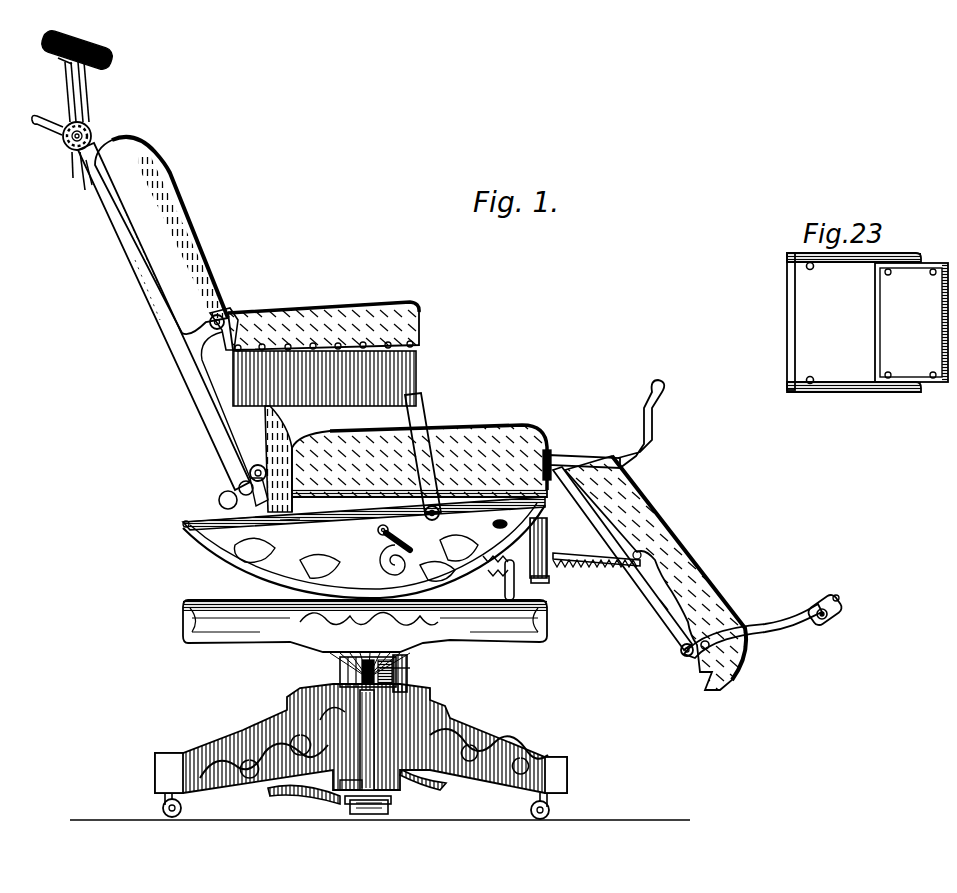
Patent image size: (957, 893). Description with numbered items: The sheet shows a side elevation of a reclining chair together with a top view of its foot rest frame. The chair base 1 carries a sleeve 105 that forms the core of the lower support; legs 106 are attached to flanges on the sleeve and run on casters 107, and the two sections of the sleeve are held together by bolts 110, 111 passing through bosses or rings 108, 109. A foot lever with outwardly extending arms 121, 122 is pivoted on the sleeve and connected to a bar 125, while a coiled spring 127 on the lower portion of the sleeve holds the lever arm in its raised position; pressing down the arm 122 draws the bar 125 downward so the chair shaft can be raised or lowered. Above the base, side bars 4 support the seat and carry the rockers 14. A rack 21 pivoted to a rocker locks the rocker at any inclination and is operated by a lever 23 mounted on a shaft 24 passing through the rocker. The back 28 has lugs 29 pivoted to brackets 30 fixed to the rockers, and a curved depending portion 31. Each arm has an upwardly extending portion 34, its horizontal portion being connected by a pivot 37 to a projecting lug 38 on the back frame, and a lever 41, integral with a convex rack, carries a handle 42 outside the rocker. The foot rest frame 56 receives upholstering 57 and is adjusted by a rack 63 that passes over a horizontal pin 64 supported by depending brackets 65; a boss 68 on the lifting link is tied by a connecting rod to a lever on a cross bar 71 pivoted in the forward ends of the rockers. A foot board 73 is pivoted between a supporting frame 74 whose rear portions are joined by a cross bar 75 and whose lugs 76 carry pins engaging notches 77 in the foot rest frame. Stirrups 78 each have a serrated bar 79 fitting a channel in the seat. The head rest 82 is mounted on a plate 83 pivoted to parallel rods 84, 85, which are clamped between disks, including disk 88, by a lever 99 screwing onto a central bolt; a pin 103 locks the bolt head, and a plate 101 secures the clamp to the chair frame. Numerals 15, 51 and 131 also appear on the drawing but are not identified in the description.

In FIG. 1, the chair base 1 is at (210, 724).
In FIG. 1, the side bars 4 is at (365, 626).
In FIG. 1, the rockers 14 is at (364, 547).
In FIG. 1, the rack segment 15 is at (458, 570).
In FIG. 1, the rack 21 is at (507, 572).
In FIG. 1, the lever 23 is at (410, 545).
In FIG. 1, the shaft 24 is at (425, 514).
In FIG. 1, the back of the chair 28 is at (136, 276).
In FIG. 1, the lug 29 is at (250, 473).
In FIG. 1, the brackets 30 is at (252, 520).
In FIG. 1, the depending portion 31 is at (220, 506).
In FIG. 1, the upwardly extending portion 34 is at (428, 408).
In FIG. 1, the pivot 37 is at (234, 313).
In FIG. 1, the projecting lug 38 is at (210, 321).
In FIG. 1, the lever 41 is at (298, 527).
In FIG. 1, the handle 42 is at (296, 440).
In FIG. 1, the cushion 51 is at (360, 305).
In FIG. 1, the foot rest frame 56 is at (636, 572).
In FIG. 1, the upholstering 57 is at (682, 553).
In FIG. 1, the rack 63 is at (588, 566).
In FIG. 1, the horizontal pin 64 is at (553, 561).
In FIG. 1, the brackets 65 is at (548, 541).
In FIG. 1, the boss 68 is at (549, 582).
In FIG. 1, the cross bar 71 is at (499, 521).
In FIG. 1, the foot board 73 is at (833, 593).
In FIG. 23, the foot board 73 is at (911, 322).
In FIG. 1, the supporting frame 74 is at (773, 623).
In FIG. 23, the supporting frame 74 is at (841, 260).
In FIG. 1, the cross bar 75 is at (684, 655).
In FIG. 23, the cross bar 75 is at (788, 323).
In FIG. 1, the lugs 76 is at (706, 650).
In FIG. 23, the lugs 76 is at (812, 268).
In FIG. 1, the notches 77 is at (656, 604).
In FIG. 1, the stirrups 78 is at (633, 432).
In FIG. 1, the bar 79 is at (566, 456).
In FIG. 1, the head rest 82 is at (110, 53).
In FIG. 1, the plate 83 is at (60, 60).
In FIG. 1, the rod 84 is at (82, 100).
In FIG. 1, the rod 85 is at (66, 88).
In FIG. 1, the disk 88 is at (69, 142).
In FIG. 1, the lever 99 is at (40, 128).
In FIG. 1, the plate 101 is at (92, 184).
In FIG. 1, the pin 103 is at (92, 130).
In FIG. 1, the sleeve 105 is at (343, 672).
In FIG. 1, the legs 106 is at (240, 728).
In FIG. 1, the casters 107 is at (163, 803).
In FIG. 1, the bosses or rings 108 is at (408, 688).
In FIG. 1, the bosses or rings 109 is at (343, 678).
In FIG. 1, the bolts 110 is at (407, 665).
In FIG. 1, the bolts 111 is at (392, 810).
In FIG. 1, the arm 121 is at (287, 793).
In FIG. 1, the arm 122 is at (440, 792).
In FIG. 1, the bar 125 is at (410, 675).
In FIG. 1, the coiled spring 127 is at (346, 785).
In FIG. 1, the pedestal neck 131 is at (422, 640).